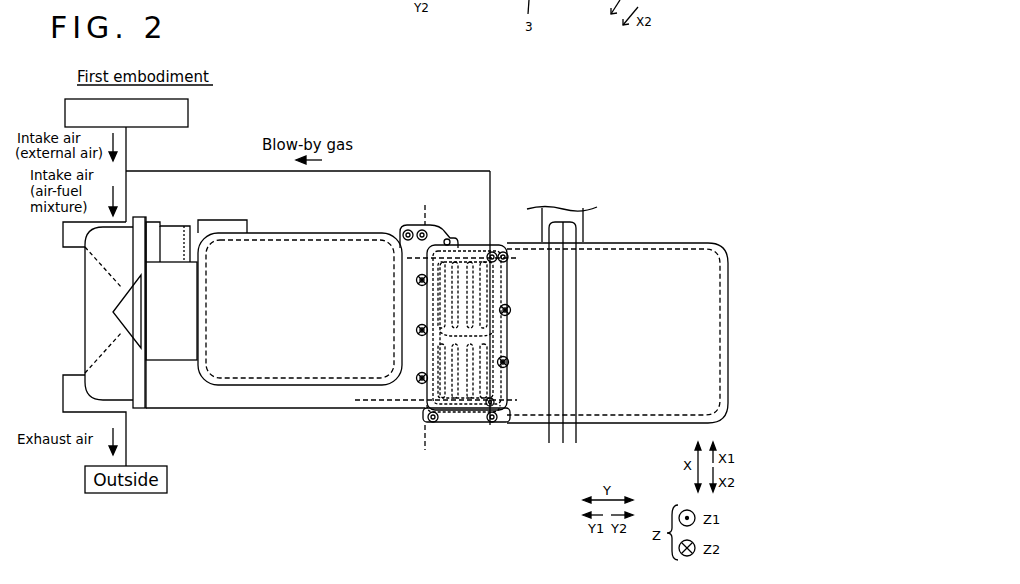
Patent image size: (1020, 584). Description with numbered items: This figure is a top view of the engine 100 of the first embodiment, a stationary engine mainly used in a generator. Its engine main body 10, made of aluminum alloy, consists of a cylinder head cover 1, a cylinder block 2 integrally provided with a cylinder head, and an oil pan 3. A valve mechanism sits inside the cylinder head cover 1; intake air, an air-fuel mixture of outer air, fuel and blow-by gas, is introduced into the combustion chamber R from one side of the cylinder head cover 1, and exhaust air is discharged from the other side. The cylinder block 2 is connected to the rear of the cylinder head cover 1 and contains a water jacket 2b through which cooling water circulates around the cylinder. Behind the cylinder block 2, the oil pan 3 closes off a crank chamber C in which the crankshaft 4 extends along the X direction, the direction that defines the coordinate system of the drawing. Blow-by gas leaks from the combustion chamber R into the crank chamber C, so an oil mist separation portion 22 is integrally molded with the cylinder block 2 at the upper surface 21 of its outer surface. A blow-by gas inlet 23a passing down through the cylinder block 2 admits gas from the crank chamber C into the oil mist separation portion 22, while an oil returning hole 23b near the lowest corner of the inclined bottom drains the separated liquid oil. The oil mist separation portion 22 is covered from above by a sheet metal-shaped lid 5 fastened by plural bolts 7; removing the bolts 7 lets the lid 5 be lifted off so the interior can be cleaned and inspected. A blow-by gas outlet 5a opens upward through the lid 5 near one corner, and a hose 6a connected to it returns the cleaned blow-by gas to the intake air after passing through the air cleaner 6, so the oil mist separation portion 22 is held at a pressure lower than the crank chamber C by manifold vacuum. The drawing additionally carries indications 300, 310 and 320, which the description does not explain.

The cylinder head cover 1 is at (97, 345).
The cylinder block 2 is at (310, 392).
The water jacket 2b is at (305, 232).
The oil pan 3 is at (640, 421).
The crankshaft 4 is at (567, 220).
The lid 5 is at (473, 250).
The blow-by gas outlet 5a is at (498, 422).
The air cleaner 6 is at (188, 113).
The hose 6a is at (490, 168).
The bolts 7 is at (417, 331).
The engine main body 10 is at (621, 171).
The upper surface 21 is at (504, 422).
The oil mist separation portion 22 is at (470, 432).
The blow-by gas inlet 23a is at (495, 252).
The oil returning hole 23b is at (410, 228).
The engine 100 is at (688, 139).
The upper dimension reference 300 is at (411, 259).
The lower dimension reference 310 is at (410, 385).
The lateral dimension reference 320 is at (457, 213).
The crank chamber C is at (648, 248).
The combustion chamber R is at (113, 305).